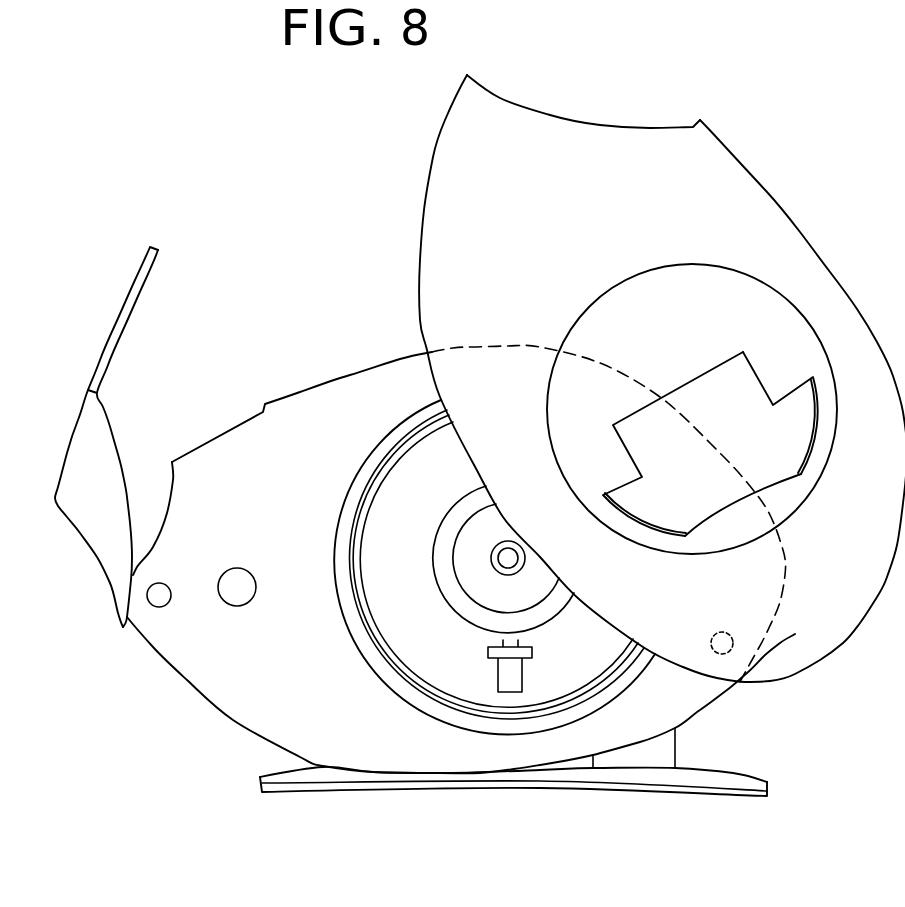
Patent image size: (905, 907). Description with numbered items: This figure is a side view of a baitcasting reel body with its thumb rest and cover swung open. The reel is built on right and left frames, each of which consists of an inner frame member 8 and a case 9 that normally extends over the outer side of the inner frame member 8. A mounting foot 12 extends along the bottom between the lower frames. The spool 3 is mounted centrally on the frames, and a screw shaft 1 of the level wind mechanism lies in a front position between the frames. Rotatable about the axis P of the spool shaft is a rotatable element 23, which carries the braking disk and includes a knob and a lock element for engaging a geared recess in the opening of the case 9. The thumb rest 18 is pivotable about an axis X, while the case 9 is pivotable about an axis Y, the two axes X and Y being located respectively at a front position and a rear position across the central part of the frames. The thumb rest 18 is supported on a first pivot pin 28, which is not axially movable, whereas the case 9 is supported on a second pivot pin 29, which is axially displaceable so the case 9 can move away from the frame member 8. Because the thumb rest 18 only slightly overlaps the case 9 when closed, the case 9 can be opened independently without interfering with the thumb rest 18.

The screw shaft 1 is at (240, 598).
The spool 3 is at (423, 633).
The inner frame member 8 is at (333, 397).
The case 9 is at (447, 157).
The mounting foot 12 is at (732, 780).
The thumb rest 18 is at (143, 288).
The rotatable element 23 is at (632, 285).
The first pivot pin 28 is at (160, 607).
The second pivot pin 29 is at (712, 633).
The axis of the spool shaft P is at (500, 557).
The axis of the thumb rest X is at (165, 590).
The axis of the case Y is at (733, 641).